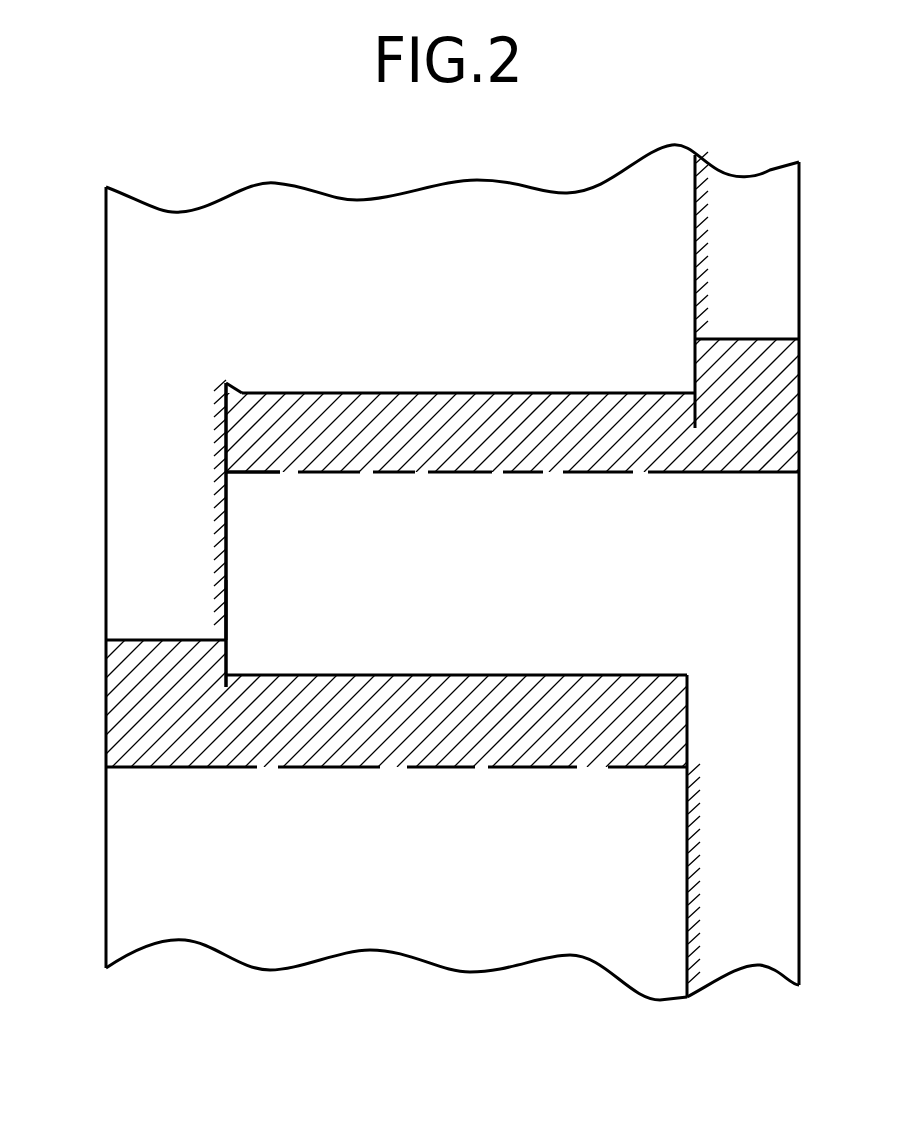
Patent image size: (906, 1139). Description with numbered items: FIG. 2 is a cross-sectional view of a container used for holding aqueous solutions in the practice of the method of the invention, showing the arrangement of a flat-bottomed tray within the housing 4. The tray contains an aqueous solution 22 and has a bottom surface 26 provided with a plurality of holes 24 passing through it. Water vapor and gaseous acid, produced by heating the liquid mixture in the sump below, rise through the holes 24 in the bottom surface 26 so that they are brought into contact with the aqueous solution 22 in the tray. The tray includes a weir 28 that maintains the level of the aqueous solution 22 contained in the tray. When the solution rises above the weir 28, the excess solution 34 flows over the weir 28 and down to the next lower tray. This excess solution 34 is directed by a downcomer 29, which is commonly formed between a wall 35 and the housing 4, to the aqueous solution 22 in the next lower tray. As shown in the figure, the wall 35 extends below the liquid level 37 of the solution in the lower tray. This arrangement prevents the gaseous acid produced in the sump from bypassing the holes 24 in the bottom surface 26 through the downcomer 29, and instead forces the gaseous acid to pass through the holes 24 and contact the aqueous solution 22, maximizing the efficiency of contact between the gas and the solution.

The housing 4 is at (106, 592).
The aqueous solution 22 is at (466, 412).
The holes 24 is at (493, 472).
The bottom surface 26 is at (257, 472).
The weir 28 is at (227, 415).
The downcomer 29 is at (146, 416).
The excess solution 34 is at (224, 505).
The wall 35 is at (228, 580).
The liquid level 37 is at (352, 672).